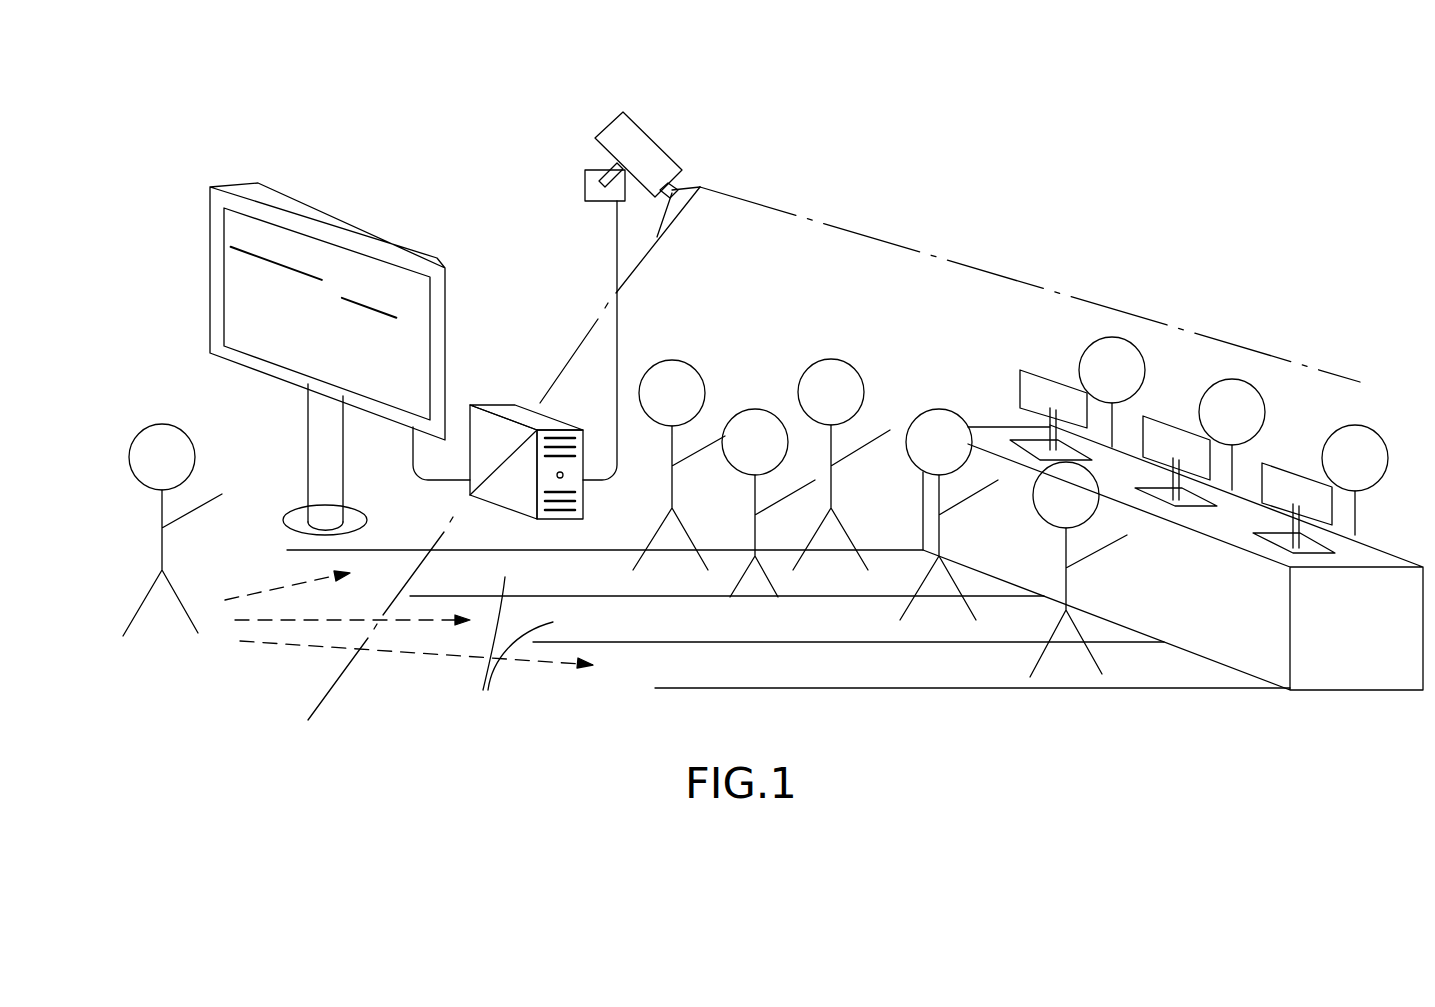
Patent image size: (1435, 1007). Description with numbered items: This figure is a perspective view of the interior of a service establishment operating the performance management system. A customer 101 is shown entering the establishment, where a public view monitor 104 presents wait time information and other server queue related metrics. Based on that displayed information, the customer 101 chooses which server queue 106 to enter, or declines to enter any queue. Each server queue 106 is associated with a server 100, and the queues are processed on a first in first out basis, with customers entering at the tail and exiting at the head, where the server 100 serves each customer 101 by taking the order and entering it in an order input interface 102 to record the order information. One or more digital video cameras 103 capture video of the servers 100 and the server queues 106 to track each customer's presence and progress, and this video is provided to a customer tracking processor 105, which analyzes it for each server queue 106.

The server 100 is at (1120, 345).
The customer 101 is at (160, 445).
The order input interface 102 is at (1020, 385).
The digital video camera 103 is at (637, 150).
The public view monitor 104 is at (343, 230).
The customer tracking processor 105 is at (507, 412).
The server queue 106 is at (645, 667).